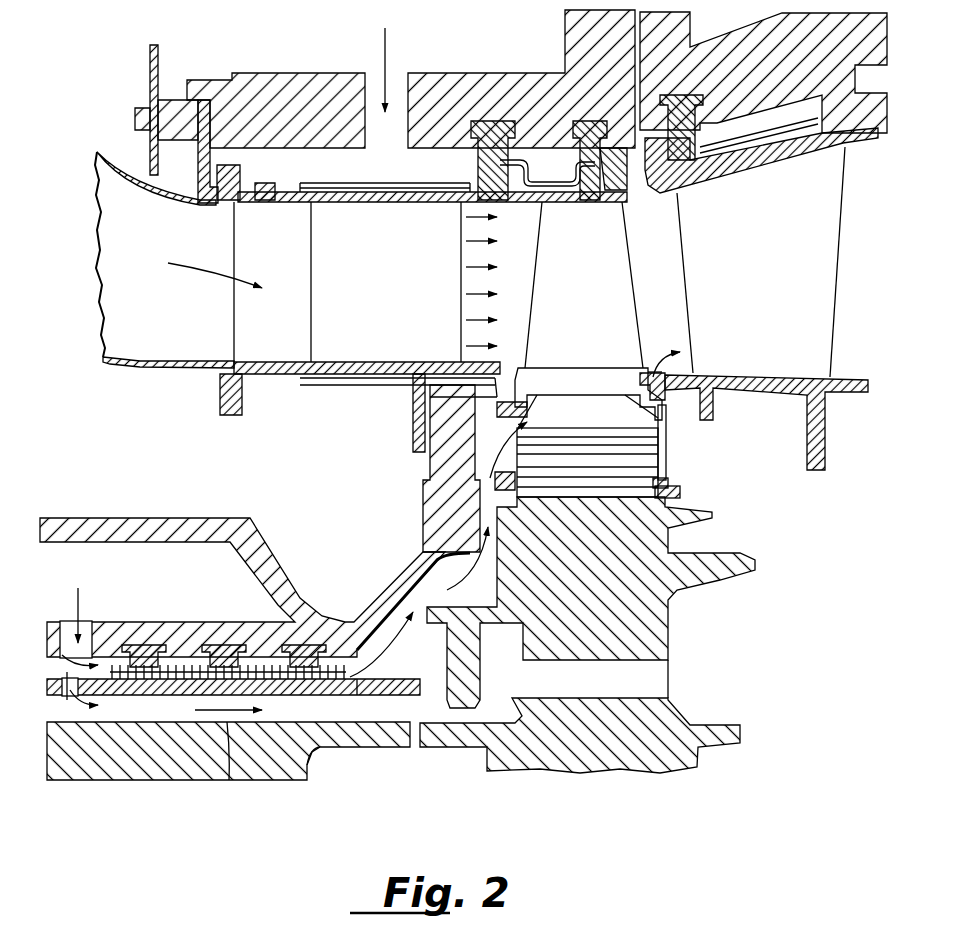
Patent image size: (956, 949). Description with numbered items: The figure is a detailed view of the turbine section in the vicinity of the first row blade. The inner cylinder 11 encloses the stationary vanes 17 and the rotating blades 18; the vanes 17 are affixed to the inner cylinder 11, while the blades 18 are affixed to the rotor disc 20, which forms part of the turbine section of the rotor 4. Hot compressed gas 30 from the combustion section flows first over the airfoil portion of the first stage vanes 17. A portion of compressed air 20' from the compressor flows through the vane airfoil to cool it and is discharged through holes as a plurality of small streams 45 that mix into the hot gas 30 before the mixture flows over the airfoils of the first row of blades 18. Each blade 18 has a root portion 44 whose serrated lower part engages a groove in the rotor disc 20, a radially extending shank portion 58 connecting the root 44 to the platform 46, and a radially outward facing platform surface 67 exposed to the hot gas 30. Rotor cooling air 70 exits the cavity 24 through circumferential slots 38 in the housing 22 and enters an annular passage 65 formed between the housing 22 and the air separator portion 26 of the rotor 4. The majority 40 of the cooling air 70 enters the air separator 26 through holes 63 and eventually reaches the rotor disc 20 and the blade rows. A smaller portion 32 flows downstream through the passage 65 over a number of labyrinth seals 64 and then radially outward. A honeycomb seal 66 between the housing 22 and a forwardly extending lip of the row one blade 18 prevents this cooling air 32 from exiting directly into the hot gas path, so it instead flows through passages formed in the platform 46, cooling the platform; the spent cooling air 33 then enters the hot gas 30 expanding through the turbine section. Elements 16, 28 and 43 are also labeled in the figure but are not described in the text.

The rotor 4 is at (178, 782).
The inner cylinder 11 is at (470, 72).
The inlet duct wall 16 is at (150, 368).
The stationary vanes 17 is at (393, 293).
The rotating blades 18 is at (596, 302).
The rotor disc 20 is at (587, 635).
The compressed air 20' is at (354, 63).
The housing 22 is at (200, 508).
The cavity 24 is at (169, 580).
The air separator 26 is at (47, 684).
The shaft shoulder 28 is at (285, 782).
The hot compressed gas 30 is at (202, 272).
The smaller portion of cooling air 32 is at (385, 640).
The spent cooling air 33 is at (653, 370).
The circumferential slots 38 is at (63, 623).
The majority of cooling air 40 is at (230, 782).
The seal ring 43 is at (354, 680).
The root portion 44 is at (640, 457).
The small streams of cooling air 45 is at (490, 222).
The platform 46 is at (553, 367).
The shank portion 58 is at (605, 425).
The holes 63 is at (62, 692).
The labyrinth seals 64 is at (145, 647).
The annular passage 65 is at (52, 668).
The honeycomb seal 66 is at (500, 408).
The radially outward facing platform surface 67 is at (617, 367).
The rotor cooling air 70 is at (82, 594).